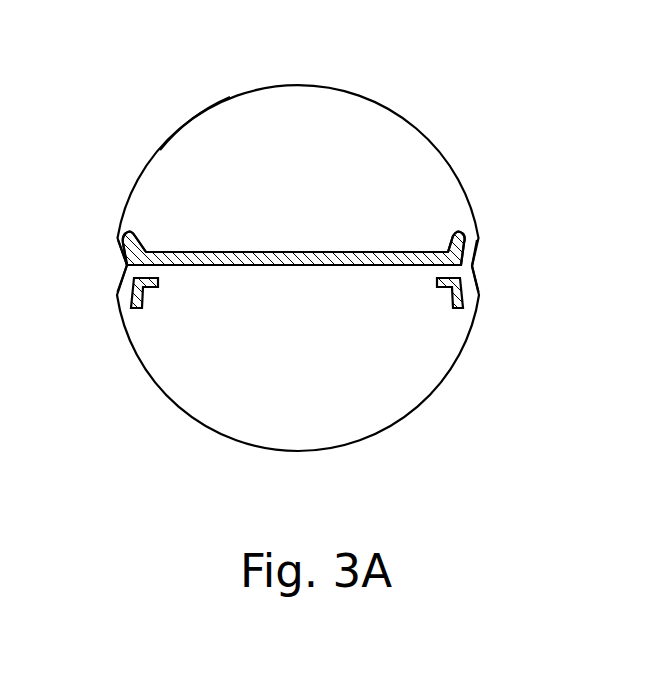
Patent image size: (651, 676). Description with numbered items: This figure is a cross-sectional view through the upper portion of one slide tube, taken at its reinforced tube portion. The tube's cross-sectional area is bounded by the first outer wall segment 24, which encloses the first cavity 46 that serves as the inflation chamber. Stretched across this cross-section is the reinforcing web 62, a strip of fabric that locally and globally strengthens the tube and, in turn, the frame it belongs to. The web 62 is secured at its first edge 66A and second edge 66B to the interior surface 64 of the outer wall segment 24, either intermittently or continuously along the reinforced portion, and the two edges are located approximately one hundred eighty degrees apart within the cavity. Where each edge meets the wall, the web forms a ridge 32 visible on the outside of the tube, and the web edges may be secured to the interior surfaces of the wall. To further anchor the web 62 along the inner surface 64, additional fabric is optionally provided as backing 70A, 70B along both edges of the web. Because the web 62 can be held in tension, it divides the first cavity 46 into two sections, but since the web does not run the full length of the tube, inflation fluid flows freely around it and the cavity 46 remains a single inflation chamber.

The first outer wall segment 24 is at (386, 430).
The first ridge 32 is at (127, 265).
The first cavity 46 is at (367, 156).
The reinforcing web 62 is at (292, 272).
The interior surface 64 is at (178, 128).
The first edge 66A is at (445, 246).
The second edge 66B is at (140, 244).
The backing 70A is at (449, 296).
The backing 70B is at (147, 289).